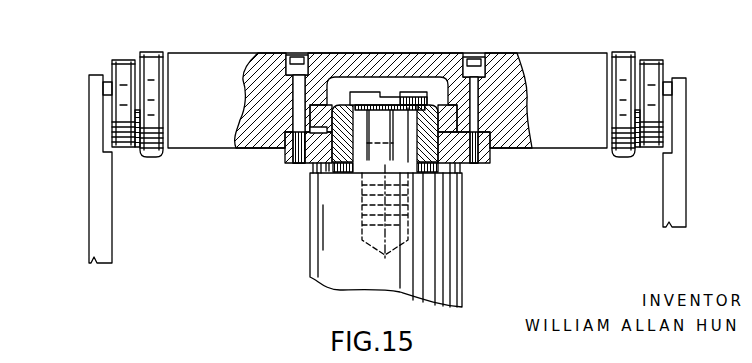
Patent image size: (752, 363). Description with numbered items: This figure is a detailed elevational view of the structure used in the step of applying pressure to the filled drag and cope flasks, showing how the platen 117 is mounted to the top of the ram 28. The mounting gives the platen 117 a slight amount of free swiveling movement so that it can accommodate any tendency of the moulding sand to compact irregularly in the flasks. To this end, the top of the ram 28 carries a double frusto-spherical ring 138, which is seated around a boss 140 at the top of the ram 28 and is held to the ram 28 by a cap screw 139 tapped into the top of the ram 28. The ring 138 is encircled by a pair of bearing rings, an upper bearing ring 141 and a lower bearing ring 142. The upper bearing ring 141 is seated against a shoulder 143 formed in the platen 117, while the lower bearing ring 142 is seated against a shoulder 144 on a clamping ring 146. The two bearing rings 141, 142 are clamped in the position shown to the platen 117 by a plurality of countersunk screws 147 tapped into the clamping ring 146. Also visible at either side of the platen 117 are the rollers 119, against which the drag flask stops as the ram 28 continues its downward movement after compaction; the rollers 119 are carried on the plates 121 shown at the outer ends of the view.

The ram 28 is at (462, 260).
The platen 117 is at (545, 54).
The rollers 119 is at (147, 60).
The bracket plate 121 is at (89, 242).
The double frusto-spherical ring 138 is at (433, 166).
The cap screw 139 is at (410, 106).
The boss 140 is at (362, 168).
The upper bearing ring 141 is at (337, 118).
The lower bearing ring 142 is at (312, 160).
The shoulder 143 is at (453, 60).
The shoulder 144 is at (323, 165).
The clamping ring 146 is at (283, 157).
The countersunk screws 147 is at (297, 55).